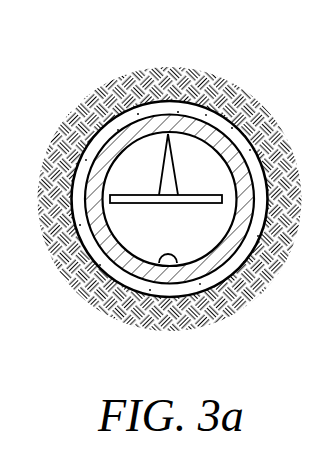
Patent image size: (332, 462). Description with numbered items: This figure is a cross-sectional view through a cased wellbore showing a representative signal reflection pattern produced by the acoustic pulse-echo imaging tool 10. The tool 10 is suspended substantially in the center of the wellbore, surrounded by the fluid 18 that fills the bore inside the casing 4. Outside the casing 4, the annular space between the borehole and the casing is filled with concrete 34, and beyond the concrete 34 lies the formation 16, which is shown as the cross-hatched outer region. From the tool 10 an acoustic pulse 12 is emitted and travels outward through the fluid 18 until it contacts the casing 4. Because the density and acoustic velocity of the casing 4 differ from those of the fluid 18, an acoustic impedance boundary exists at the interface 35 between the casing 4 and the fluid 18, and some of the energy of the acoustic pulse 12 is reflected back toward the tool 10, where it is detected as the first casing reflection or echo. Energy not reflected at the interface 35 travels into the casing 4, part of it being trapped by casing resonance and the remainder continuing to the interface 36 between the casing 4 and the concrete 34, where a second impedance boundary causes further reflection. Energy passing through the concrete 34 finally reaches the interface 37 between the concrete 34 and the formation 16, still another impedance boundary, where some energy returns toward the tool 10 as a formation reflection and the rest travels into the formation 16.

The casing 4 is at (108, 243).
The tool 10 is at (193, 204).
The acoustic pulse 12 is at (126, 136).
The formation 16 is at (162, 82).
The fluid 18 is at (222, 176).
The concrete 34 is at (66, 289).
The interface 35 is at (116, 298).
The interface 36 is at (188, 283).
The interface 37 is at (234, 291).